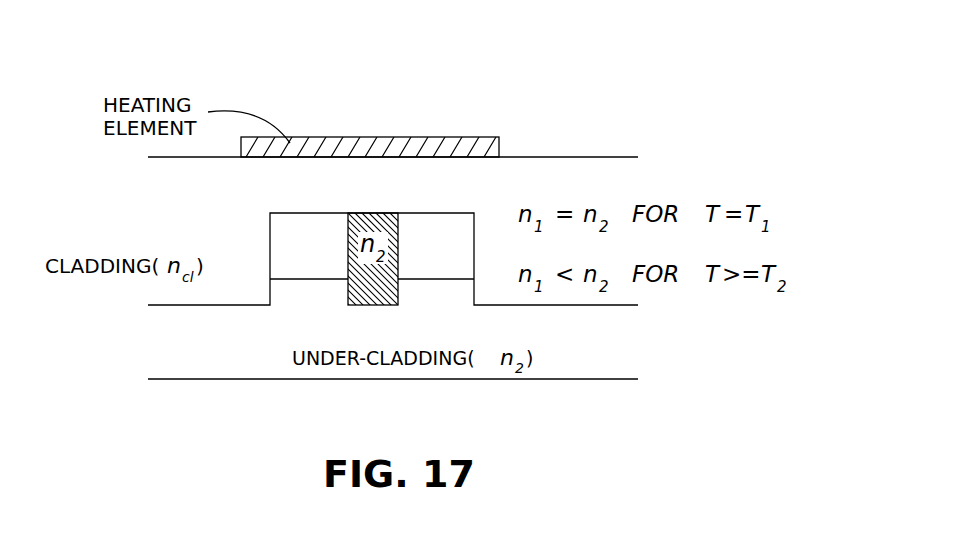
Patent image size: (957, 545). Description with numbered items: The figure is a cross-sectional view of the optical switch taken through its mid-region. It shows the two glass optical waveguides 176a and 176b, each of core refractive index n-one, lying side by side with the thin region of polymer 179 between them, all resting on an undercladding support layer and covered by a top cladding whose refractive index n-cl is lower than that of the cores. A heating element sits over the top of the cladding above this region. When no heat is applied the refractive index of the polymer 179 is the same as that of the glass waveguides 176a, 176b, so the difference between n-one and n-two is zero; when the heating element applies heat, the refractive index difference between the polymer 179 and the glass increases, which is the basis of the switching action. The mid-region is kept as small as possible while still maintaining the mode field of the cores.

The polymer 179 is at (608, 175).
The optical waveguide 176a is at (288, 225).
The optical waveguide 176b is at (458, 220).